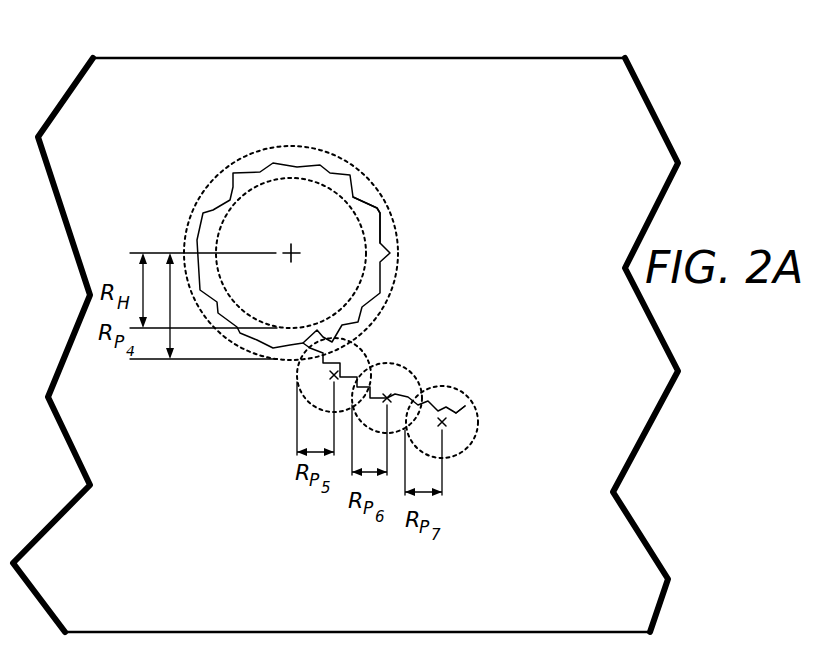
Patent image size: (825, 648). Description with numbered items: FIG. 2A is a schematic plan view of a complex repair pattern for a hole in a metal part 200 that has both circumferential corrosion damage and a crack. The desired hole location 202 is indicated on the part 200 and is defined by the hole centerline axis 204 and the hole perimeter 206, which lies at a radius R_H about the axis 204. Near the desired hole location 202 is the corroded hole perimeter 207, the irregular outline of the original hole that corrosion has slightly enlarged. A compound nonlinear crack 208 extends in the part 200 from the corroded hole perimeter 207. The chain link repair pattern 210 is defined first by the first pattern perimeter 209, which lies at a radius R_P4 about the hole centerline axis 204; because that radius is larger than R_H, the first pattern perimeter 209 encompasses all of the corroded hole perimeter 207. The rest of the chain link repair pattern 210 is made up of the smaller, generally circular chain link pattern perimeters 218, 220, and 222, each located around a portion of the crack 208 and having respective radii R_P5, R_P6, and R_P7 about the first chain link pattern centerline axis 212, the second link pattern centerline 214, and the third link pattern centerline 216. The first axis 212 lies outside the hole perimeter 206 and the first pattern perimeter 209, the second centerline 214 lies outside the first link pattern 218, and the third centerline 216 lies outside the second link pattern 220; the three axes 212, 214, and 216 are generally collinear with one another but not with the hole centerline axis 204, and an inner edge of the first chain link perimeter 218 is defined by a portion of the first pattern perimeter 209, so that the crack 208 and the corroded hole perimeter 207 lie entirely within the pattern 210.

The part 200 is at (500, 72).
The desired hole location 202 is at (380, 215).
The hole centerline axis 204 is at (296, 252).
The hole perimeter 206 is at (230, 212).
The corroded hole perimeter 207 is at (235, 173).
The crack 208 is at (446, 417).
The first pattern perimeter 209 is at (362, 170).
The chain link repair pattern 210 is at (250, 422).
The first chain link pattern centerline axis 212 is at (332, 375).
The second link pattern centerline 214 is at (390, 397).
The third link pattern centerline 216 is at (467, 405).
The first chain link pattern perimeter 218 is at (365, 355).
The second chain link pattern perimeter 220 is at (409, 371).
The third chain link pattern perimeter 222 is at (478, 419).